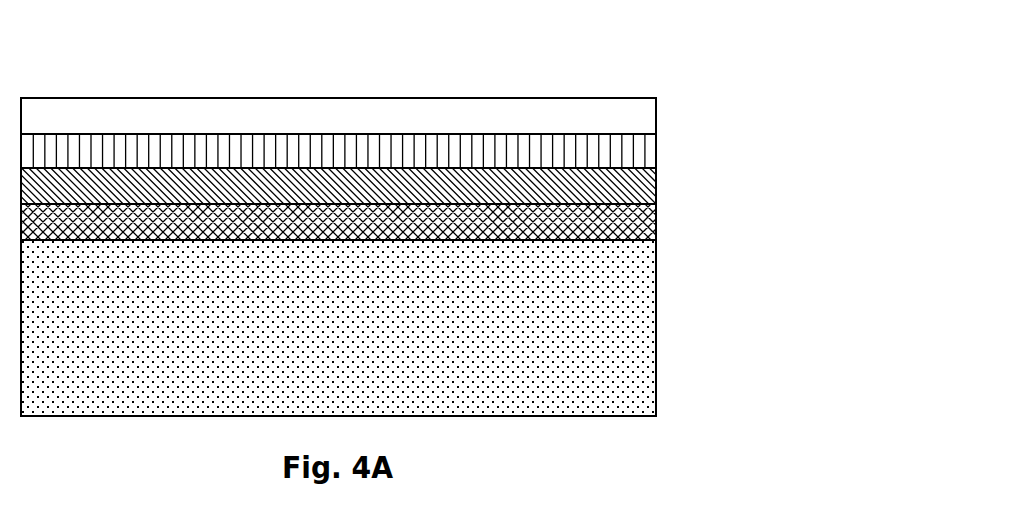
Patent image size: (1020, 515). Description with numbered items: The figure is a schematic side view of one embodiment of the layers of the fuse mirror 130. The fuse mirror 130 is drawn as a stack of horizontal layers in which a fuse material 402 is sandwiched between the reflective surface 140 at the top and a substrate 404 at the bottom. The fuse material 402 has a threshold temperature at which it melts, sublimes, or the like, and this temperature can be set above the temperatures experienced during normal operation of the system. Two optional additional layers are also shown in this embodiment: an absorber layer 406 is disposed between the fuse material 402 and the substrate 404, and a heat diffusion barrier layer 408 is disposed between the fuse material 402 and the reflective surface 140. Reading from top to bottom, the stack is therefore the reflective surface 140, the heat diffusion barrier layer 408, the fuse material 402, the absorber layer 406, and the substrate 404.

The fuse mirror 130 is at (674, 81).
The reflective surface 140 is at (656, 114).
The heat diffusion barrier layer 408 is at (656, 151).
The fuse material 402 is at (656, 186).
The absorber layer 406 is at (656, 223).
The substrate 404 is at (656, 300).